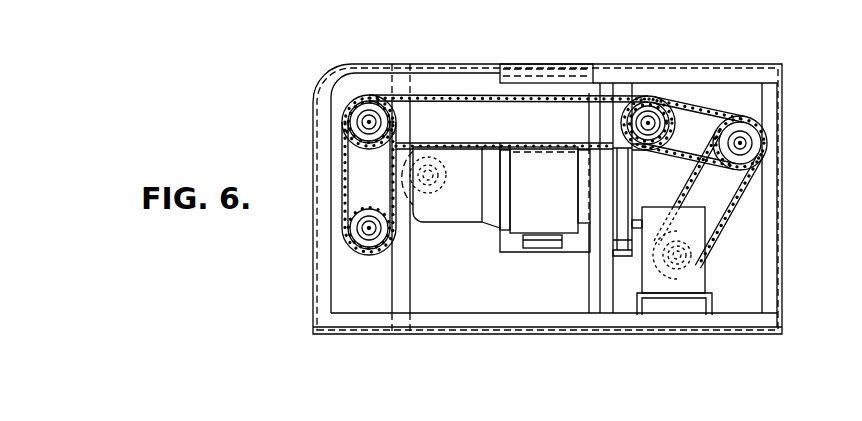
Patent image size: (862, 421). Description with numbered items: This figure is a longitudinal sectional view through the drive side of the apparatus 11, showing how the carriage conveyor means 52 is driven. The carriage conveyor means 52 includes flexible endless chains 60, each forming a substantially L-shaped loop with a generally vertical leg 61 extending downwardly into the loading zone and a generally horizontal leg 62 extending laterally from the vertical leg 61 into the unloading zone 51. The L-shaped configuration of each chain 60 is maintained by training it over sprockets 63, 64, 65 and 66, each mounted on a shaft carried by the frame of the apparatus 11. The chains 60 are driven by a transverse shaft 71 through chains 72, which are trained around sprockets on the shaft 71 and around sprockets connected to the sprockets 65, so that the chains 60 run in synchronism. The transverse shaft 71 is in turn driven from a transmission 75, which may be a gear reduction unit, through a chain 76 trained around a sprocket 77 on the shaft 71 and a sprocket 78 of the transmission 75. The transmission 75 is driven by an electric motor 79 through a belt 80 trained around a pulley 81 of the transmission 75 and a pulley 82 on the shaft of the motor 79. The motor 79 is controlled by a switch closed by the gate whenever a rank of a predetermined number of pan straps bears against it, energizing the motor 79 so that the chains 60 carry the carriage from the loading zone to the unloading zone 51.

The apparatus 11 is at (552, 50).
The unloading zone 51 is at (694, 6).
The carriage conveyor means 52 is at (458, 93).
The chains 60 is at (417, 92).
The generally vertical leg 61 is at (343, 205).
The generally horizontal leg 62 is at (602, 93).
The sprocket 63 is at (350, 238).
The sprocket 64 is at (352, 119).
The sprocket 65 is at (662, 96).
The sprocket 66 is at (412, 198).
The transverse shaft 71 is at (742, 143).
The chains 72 is at (720, 112).
The transmission 75 is at (703, 288).
The chain 76 is at (730, 223).
The sprocket 77 is at (762, 147).
The sprocket 78 is at (698, 260).
The electric motor 79 is at (536, 226).
The belt 80 is at (619, 201).
The pulley 81 is at (613, 236).
The pulley 82 is at (633, 175).